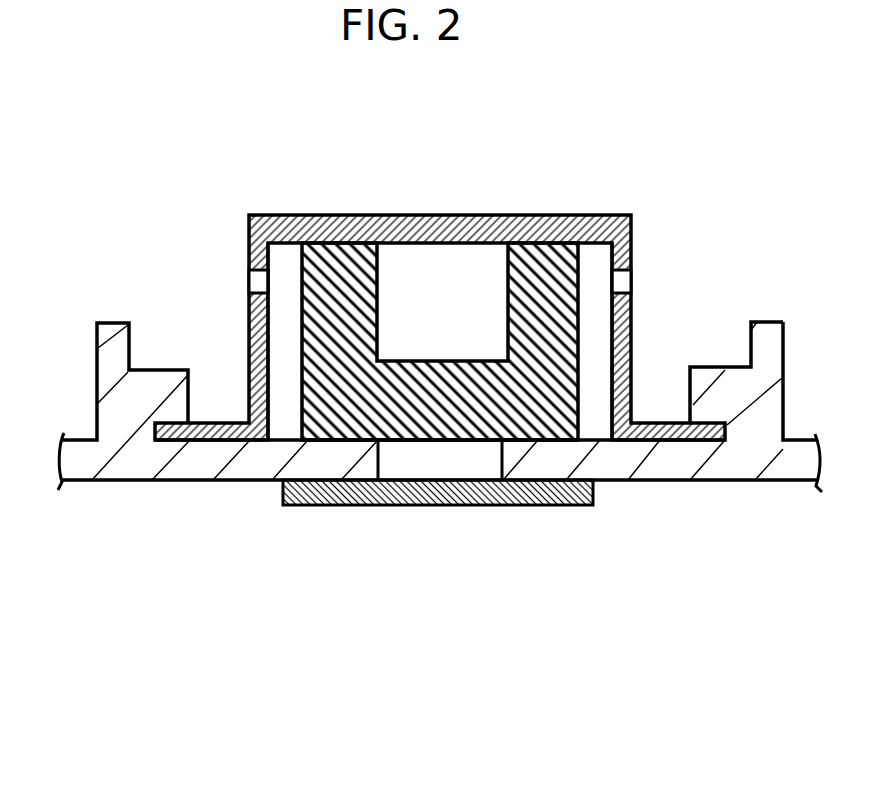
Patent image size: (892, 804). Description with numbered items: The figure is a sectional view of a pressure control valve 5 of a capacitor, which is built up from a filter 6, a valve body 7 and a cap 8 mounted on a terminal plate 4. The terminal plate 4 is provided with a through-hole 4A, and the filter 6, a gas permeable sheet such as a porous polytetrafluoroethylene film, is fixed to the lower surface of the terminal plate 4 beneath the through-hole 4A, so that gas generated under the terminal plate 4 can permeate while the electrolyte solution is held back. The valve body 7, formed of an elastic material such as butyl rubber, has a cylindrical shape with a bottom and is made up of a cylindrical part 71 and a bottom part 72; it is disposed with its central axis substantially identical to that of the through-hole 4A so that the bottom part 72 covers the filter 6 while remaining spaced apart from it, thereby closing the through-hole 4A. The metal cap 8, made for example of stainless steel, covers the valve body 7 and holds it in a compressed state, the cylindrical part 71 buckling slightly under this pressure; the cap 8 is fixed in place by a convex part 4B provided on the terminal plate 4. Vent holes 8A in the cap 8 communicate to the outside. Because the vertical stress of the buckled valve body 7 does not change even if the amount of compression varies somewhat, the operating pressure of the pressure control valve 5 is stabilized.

The terminal plate 4 is at (148, 460).
The through-hole 4A is at (452, 466).
The convex part 4B is at (721, 367).
The pressure control valve 5 is at (631, 207).
The filter 6 is at (337, 487).
The valve body 7 is at (483, 398).
The cylindrical part 71 is at (568, 292).
The bottom part 72 is at (503, 440).
The cap 8 is at (265, 230).
The vent holes 8A is at (257, 278).